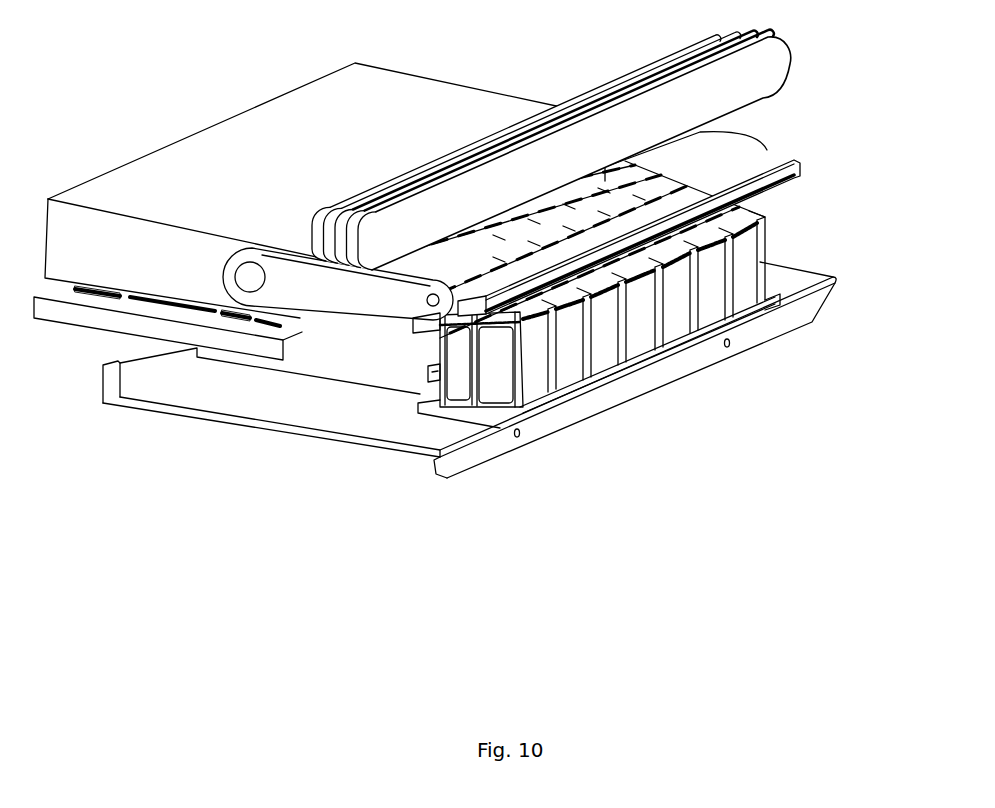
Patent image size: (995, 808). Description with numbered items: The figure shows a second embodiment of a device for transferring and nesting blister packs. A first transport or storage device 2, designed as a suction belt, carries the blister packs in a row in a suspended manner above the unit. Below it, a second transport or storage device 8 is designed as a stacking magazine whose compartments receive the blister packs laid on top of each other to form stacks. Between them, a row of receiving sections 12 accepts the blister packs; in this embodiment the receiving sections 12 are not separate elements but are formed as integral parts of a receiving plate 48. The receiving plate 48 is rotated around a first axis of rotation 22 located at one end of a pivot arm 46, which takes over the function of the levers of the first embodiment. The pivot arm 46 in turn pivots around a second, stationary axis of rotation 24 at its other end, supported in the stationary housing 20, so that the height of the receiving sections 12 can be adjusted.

The stationary housing 20 is at (287, 152).
The first transport or storage device 2 is at (587, 140).
The receiving sections 12 is at (752, 157).
The second transport or storage device 8 is at (677, 305).
The second axis of rotation 24 is at (252, 278).
The pivot arm 46 is at (323, 290).
The first axis of rotation 22 is at (430, 302).
The receiving plate 48 is at (438, 366).